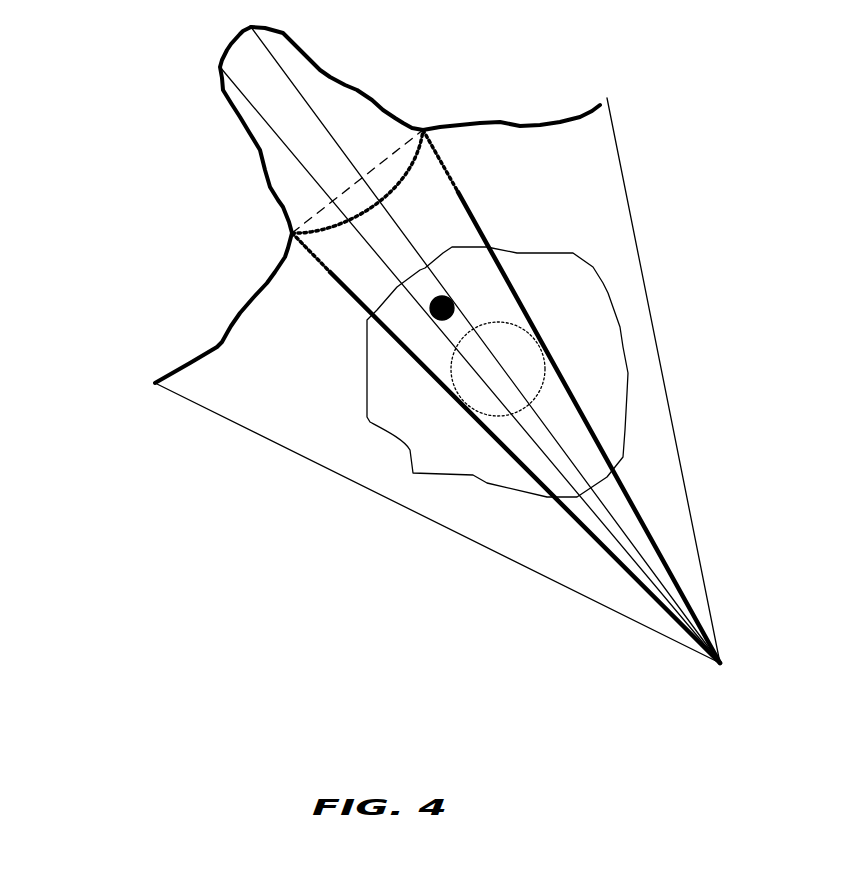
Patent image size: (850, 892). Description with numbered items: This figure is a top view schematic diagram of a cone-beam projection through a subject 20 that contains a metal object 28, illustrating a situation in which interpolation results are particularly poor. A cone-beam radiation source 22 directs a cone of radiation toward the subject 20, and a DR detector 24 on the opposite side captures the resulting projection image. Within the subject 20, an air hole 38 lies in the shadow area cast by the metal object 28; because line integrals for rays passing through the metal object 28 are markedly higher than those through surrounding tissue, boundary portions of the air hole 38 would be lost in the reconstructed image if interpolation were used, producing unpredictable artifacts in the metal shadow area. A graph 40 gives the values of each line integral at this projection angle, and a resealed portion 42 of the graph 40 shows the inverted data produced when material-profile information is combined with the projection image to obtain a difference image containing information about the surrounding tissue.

The subject 20 is at (622, 343).
The cone-beam radiation source 22 is at (717, 668).
The DR detector 24 is at (188, 373).
The metal object 28 is at (533, 392).
The air hole 38 is at (444, 305).
The graph 40 is at (265, 187).
The resealed portion 42 is at (402, 180).